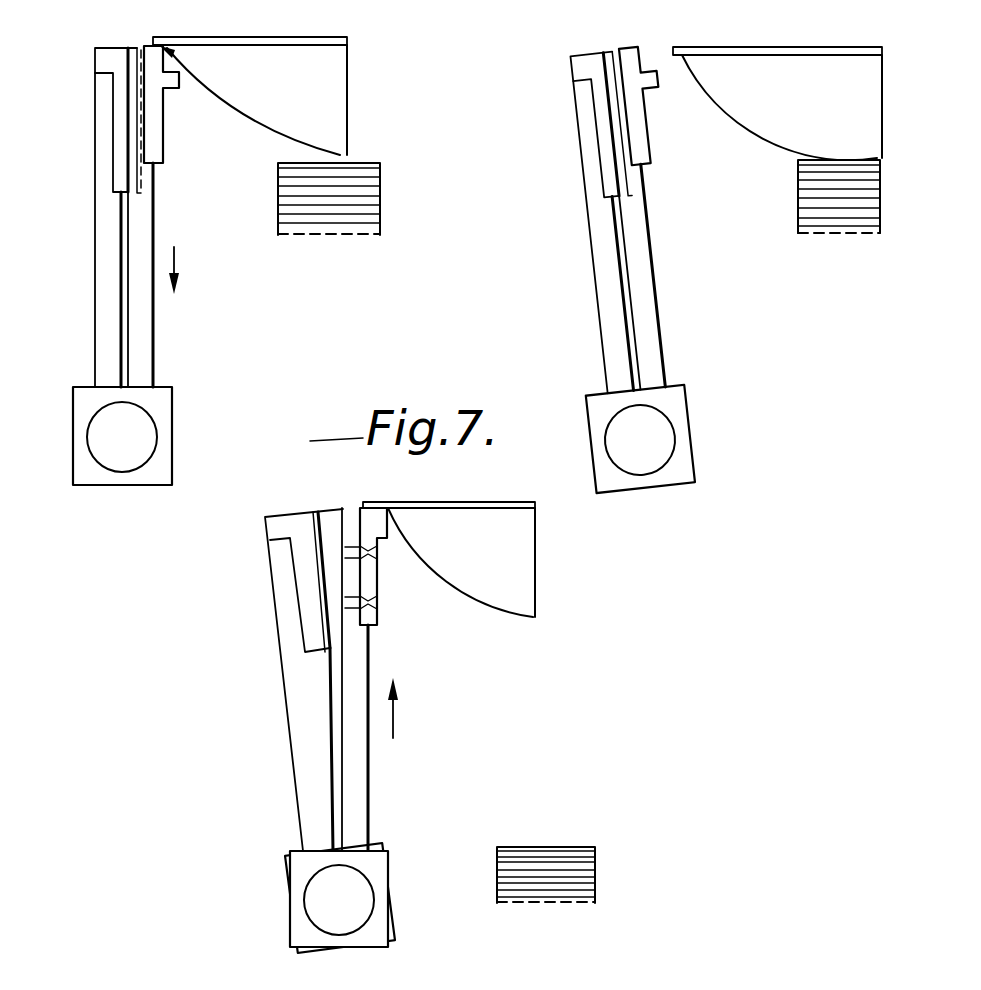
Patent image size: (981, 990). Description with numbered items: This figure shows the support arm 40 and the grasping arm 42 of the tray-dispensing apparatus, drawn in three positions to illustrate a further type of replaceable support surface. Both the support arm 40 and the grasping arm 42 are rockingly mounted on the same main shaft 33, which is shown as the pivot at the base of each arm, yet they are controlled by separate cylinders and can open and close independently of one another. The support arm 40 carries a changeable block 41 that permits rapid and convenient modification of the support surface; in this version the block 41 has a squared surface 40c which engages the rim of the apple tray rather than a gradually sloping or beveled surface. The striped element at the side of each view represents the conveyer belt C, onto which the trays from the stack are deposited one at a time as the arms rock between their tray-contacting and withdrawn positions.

The main shaft 33 is at (638, 442).
The support arm 40 is at (233, 213).
The squared surface 40c is at (470, 496).
The block 41 is at (153, 125).
The grasping arm 42 is at (100, 143).
The conveyer belt C is at (828, 202).